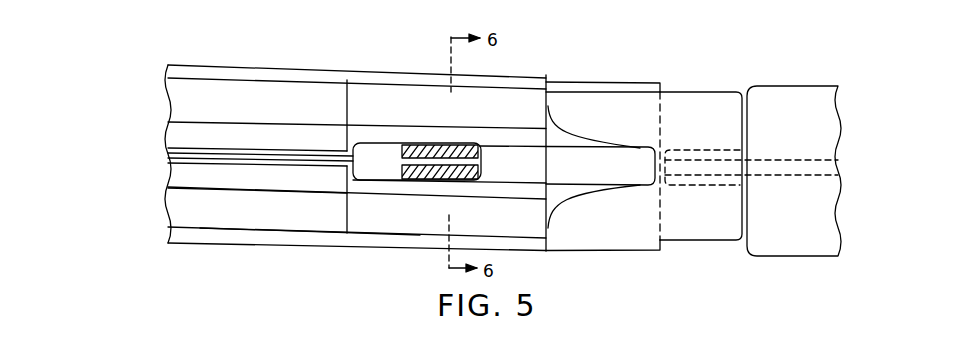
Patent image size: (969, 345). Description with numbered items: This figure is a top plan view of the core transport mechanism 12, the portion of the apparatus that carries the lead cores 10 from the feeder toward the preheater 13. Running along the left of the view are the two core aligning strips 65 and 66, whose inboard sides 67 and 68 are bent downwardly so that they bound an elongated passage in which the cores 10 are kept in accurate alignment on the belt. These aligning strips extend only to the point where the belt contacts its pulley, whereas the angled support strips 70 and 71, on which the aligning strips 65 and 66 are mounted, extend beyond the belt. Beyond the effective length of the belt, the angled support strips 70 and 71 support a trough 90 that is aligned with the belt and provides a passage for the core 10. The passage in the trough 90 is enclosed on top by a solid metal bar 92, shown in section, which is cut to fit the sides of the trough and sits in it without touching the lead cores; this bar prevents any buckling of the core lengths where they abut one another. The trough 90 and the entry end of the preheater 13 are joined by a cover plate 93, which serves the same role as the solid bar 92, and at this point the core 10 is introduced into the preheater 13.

The core 10 is at (213, 157).
The core transport mechanism 12 is at (420, 72).
The preheater 13 is at (772, 78).
The core aligning strip 65 is at (237, 218).
The core aligning strip 66 is at (280, 98).
The inboard side of core aligning strip 67 is at (173, 177).
The inboard side of core aligning strip 68 is at (178, 135).
The angled support strip 70 is at (310, 240).
The angled support strip 71 is at (332, 77).
The trough 90 is at (412, 222).
The solid metal bar 92 is at (379, 158).
The cover plate 93 is at (598, 113).